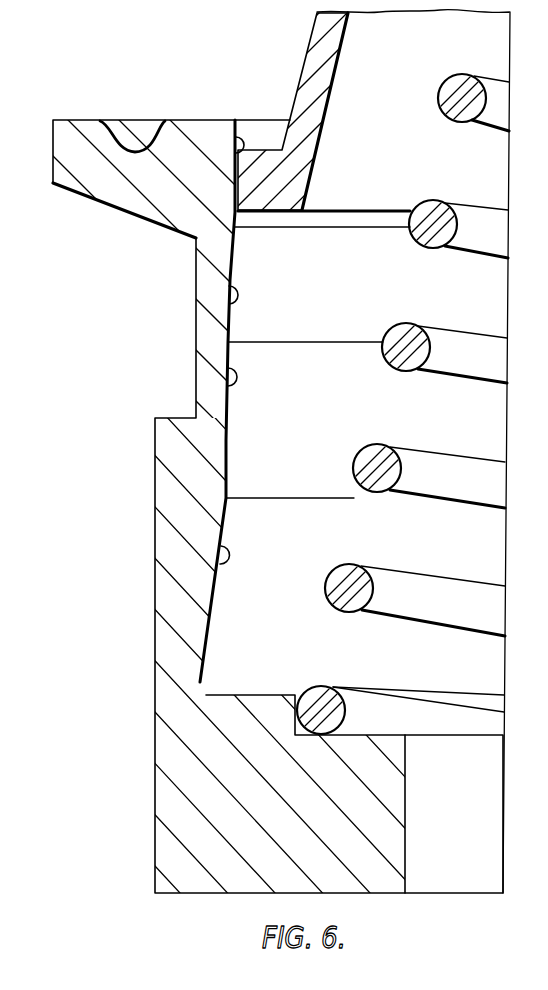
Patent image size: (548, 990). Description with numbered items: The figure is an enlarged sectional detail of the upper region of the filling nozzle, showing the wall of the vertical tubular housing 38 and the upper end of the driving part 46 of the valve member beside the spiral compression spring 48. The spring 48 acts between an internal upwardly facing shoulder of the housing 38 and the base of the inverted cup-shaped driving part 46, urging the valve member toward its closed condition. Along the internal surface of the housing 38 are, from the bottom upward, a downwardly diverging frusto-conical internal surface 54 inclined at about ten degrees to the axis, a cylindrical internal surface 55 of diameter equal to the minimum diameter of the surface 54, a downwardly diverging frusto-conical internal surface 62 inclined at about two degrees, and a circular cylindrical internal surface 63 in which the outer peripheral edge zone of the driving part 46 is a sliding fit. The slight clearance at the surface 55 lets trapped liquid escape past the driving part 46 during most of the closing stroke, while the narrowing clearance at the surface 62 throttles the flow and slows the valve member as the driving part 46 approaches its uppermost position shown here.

The housing 38 is at (170, 463).
The driving part 46 is at (312, 43).
The spiral compression spring 48 is at (340, 603).
The frusto-conical internal surface 54 is at (220, 547).
The cylindrical internal surface 55 is at (229, 370).
The frusto-conical internal surface 62 is at (228, 286).
The circular cylindrical internal surface 63 is at (235, 150).